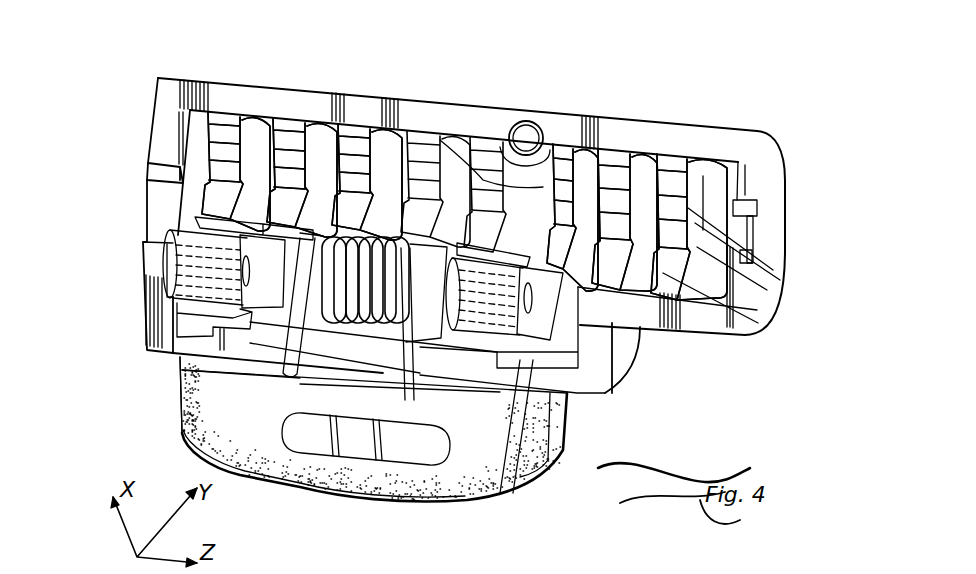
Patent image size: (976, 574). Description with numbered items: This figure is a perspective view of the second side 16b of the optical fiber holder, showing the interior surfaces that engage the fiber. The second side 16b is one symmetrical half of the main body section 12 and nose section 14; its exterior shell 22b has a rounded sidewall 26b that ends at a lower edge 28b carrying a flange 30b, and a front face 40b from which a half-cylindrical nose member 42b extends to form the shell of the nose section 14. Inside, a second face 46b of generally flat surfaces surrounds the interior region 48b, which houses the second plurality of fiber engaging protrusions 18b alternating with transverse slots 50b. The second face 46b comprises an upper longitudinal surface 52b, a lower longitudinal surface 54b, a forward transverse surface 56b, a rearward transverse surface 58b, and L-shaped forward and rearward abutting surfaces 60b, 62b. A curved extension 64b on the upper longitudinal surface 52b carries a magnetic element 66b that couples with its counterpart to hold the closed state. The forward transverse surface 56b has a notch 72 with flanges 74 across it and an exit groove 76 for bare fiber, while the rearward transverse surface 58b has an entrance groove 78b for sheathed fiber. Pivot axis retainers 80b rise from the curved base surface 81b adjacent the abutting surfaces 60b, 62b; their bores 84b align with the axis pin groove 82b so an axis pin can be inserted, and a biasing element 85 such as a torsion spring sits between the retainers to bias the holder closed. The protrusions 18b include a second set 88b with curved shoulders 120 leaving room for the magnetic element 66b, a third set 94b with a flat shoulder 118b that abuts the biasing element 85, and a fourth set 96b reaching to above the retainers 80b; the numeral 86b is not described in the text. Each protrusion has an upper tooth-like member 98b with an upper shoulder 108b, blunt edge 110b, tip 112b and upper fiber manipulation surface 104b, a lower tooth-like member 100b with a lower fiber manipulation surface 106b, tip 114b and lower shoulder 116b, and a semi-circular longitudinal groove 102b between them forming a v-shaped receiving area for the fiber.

The main body section 12 is at (345, 90).
The nose section 14 is at (755, 330).
The second side 16b is at (353, 95).
The second plurality of fiber engaging protrusions 18b is at (318, 102).
The exterior shell 22b is at (283, 117).
The rounded sidewall 26b is at (575, 125).
The lower edge 28b is at (604, 395).
The flange 30b is at (463, 492).
The front face 40b is at (626, 358).
The nose member 42b is at (751, 197).
The second face 46b is at (675, 137).
The interior region 48b is at (565, 127).
The second plurality of transverse slots 50b is at (613, 137).
The upper longitudinal surface 52b is at (315, 98).
The lower longitudinal surface 54b is at (722, 325).
The forward transverse surface 56b is at (753, 158).
The rearward transverse surface 58b is at (163, 130).
The forward abutting surface 60b is at (591, 378).
The rearward abutting surface 62b is at (163, 302).
The curved extension 64b is at (526, 135).
The magnetic element 66b is at (503, 135).
The notch 72 is at (763, 213).
The flanges 74 is at (773, 197).
The exit groove 76 is at (760, 250).
The entrance groove 78b is at (163, 187).
The pivot axis retainers 80b is at (193, 243).
The curved base surface 81b is at (178, 375).
The axis pin groove 82b is at (152, 265).
The bore 84b is at (243, 268).
The biasing element 85 is at (182, 437).
The contact lobe 86b is at (655, 153).
The second set of fiber engaging protrusions 88b is at (445, 145).
The third set of fiber engaging protrusions 94b is at (428, 143).
The fourth set of fiber engaging protrusions 96b is at (230, 118).
The upper tooth-like member 98b is at (743, 200).
The lower tooth-like member 100b is at (757, 327).
The semi-circular longitudinal groove 102b is at (757, 280).
The upper fiber manipulation surface 104b is at (760, 255).
The lower fiber manipulation surface 106b is at (767, 297).
The upper shoulder 108b is at (689, 160).
The blunt edge 110b is at (700, 167).
The tip 112b is at (721, 195).
The tip 114b is at (677, 270).
The lower shoulder 116b is at (663, 277).
The flat shoulder 118b is at (350, 332).
The curved shoulders 120 is at (500, 148).